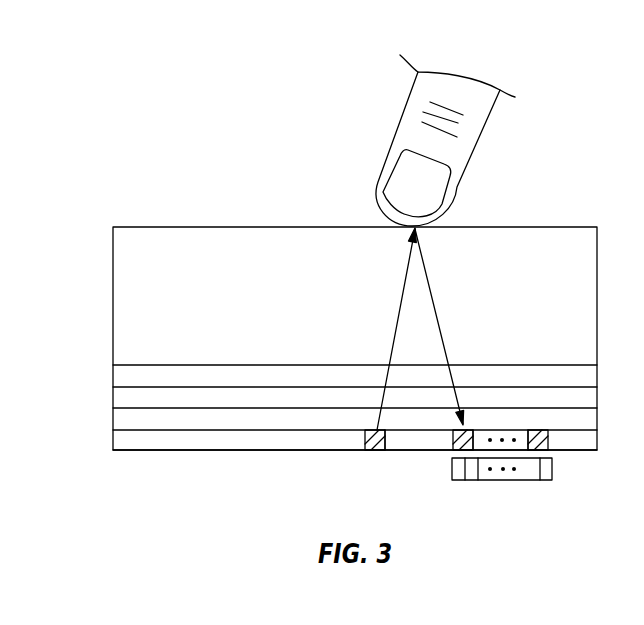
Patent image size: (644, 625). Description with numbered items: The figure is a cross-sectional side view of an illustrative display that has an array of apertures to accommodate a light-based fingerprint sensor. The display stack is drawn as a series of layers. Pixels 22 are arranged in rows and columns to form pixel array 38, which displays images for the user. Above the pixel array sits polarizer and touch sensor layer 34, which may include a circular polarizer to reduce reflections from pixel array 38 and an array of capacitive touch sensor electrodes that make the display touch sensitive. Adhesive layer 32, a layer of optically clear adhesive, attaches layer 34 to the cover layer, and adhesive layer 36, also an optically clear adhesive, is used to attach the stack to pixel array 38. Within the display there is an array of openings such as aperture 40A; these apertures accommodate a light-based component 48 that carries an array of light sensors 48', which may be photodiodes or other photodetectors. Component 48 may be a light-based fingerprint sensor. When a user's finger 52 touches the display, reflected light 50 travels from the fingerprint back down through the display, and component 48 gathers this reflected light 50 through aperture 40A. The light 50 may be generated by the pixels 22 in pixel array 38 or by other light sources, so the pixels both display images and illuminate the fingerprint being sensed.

The pixels 22 is at (367, 447).
The adhesive layer 32 is at (122, 378).
The polarizer and touch sensor layer 34 is at (122, 399).
The adhesive layer 36 is at (122, 421).
The pixel array 38 is at (122, 443).
The aperture 40A is at (453, 448).
The component 48 is at (502, 494).
The light sensors 48' is at (473, 500).
The reflected light 50 is at (402, 289).
The finger 52 is at (405, 111).